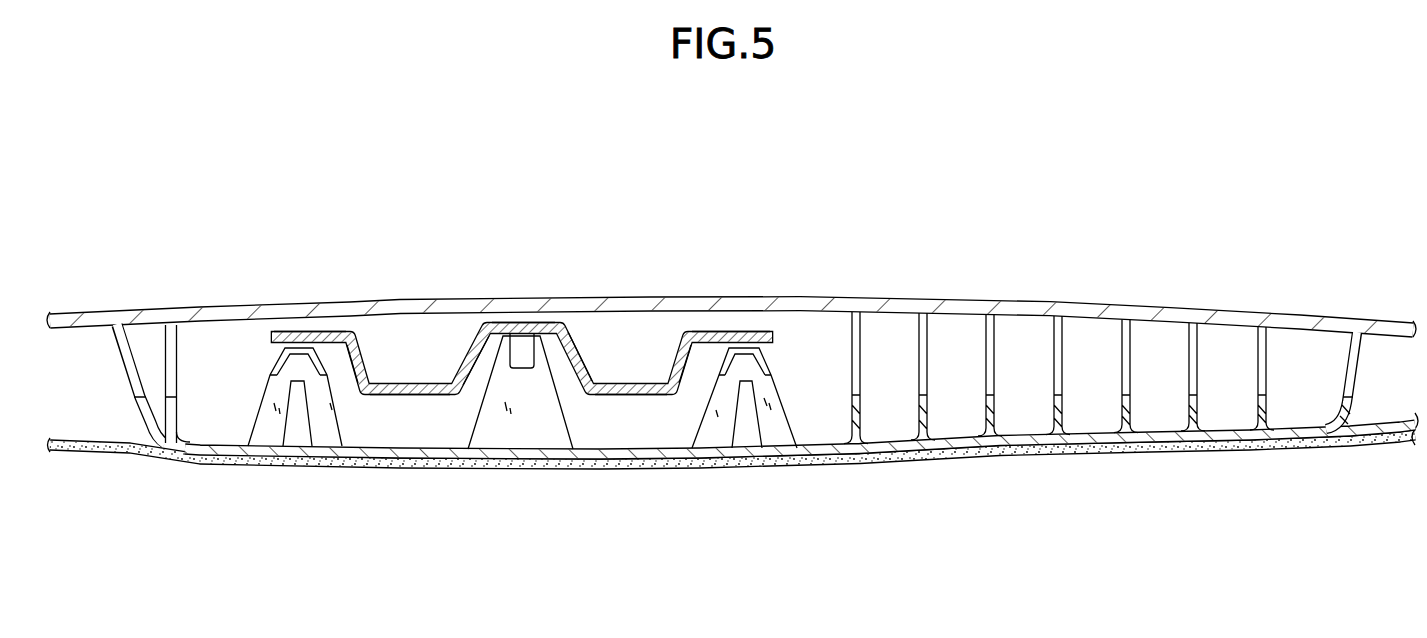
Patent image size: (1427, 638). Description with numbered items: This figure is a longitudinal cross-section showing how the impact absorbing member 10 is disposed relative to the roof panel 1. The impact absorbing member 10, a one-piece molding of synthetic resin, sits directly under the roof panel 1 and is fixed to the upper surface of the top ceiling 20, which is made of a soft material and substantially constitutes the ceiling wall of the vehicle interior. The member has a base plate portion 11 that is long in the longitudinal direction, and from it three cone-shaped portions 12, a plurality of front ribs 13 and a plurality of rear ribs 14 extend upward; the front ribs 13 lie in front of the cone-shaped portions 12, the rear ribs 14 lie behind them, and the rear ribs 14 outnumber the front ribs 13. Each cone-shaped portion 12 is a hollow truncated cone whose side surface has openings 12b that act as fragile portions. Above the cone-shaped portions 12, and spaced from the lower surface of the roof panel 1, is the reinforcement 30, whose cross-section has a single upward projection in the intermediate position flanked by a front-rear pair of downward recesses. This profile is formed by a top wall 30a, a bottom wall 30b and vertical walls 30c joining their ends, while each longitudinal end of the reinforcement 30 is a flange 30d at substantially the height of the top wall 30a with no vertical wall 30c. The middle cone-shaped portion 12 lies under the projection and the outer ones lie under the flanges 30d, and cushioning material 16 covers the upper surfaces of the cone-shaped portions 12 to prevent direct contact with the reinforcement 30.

The roof panel 1 is at (1114, 304).
The impact absorbing member 10 is at (607, 452).
The base plate portion 11 is at (800, 513).
The cone-shaped portion 12 is at (272, 432).
The opening 12b is at (297, 432).
The front rib 13 is at (168, 353).
The rear rib 14 is at (919, 421).
The cushioning material 16 is at (526, 356).
The top ceiling 20 is at (978, 455).
The reinforcement 30 is at (472, 330).
The top wall 30a is at (537, 324).
The bottom wall 30b is at (409, 396).
The vertical wall 30c is at (367, 357).
The flange 30d is at (300, 333).